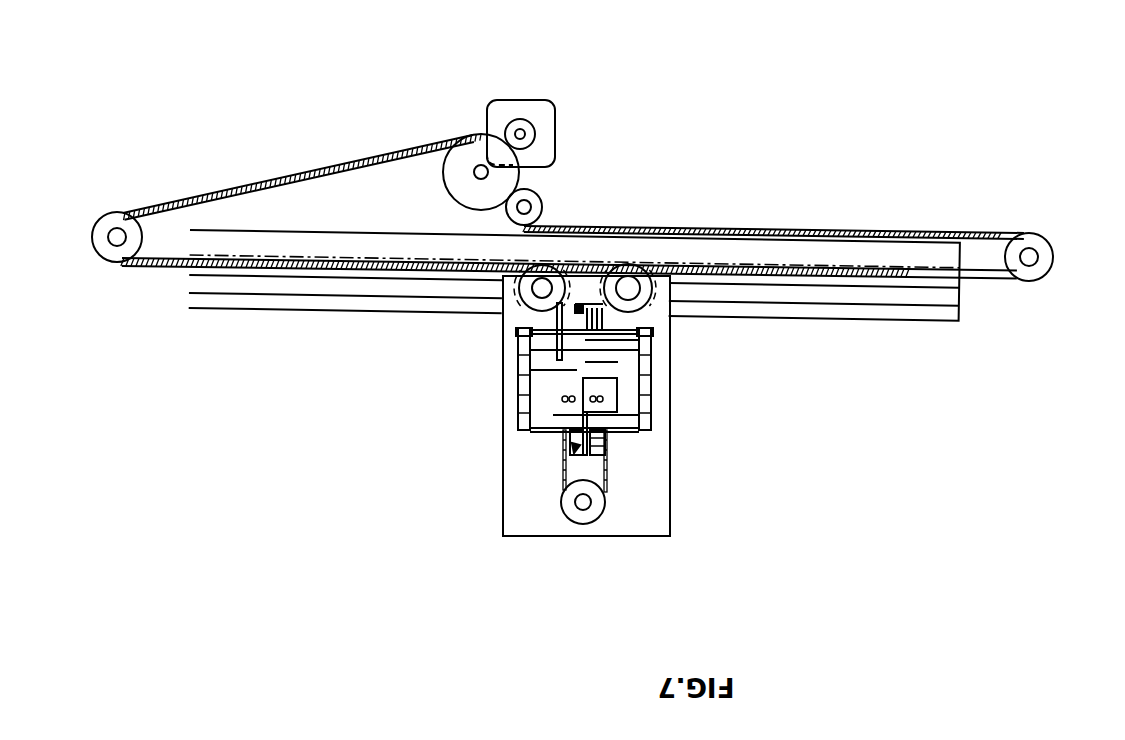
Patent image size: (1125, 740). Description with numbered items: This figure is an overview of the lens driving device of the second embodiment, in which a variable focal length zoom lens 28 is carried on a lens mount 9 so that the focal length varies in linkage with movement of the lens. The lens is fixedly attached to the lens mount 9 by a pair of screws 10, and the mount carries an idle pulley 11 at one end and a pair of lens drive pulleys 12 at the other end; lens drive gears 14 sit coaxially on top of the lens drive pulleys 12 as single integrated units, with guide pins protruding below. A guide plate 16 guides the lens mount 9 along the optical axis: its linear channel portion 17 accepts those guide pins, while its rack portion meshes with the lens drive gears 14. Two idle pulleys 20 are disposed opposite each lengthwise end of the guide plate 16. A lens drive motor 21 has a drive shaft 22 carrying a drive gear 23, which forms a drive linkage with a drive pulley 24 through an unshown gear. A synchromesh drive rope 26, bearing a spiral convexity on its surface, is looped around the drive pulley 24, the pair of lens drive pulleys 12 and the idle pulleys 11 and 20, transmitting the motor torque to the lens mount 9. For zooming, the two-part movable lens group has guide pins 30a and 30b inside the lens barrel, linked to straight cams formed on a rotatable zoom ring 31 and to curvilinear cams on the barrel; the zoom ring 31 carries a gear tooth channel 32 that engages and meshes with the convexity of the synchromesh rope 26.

The lens mount 9 is at (502, 508).
The screws 10 is at (570, 453).
The idle pulley 11 is at (561, 514).
The lens drive pulleys 12 is at (508, 293).
The lens drive gears 14 is at (520, 315).
The guide plate 16 is at (183, 300).
The linear channel portion 17 is at (220, 285).
The idle pulleys 20 is at (118, 258).
The lens drive motor 21 is at (498, 100).
The drive shaft 22 is at (492, 118).
The drive gear 23 is at (534, 131).
The drive pulley 24 is at (452, 194).
The synchromesh drive rope 26 is at (307, 170).
The zoom lens 28 is at (520, 422).
The guide pin 30a is at (597, 396).
The guide pin 30b is at (568, 402).
The zoom ring 31 is at (582, 380).
The gear tooth channel 32 is at (556, 357).